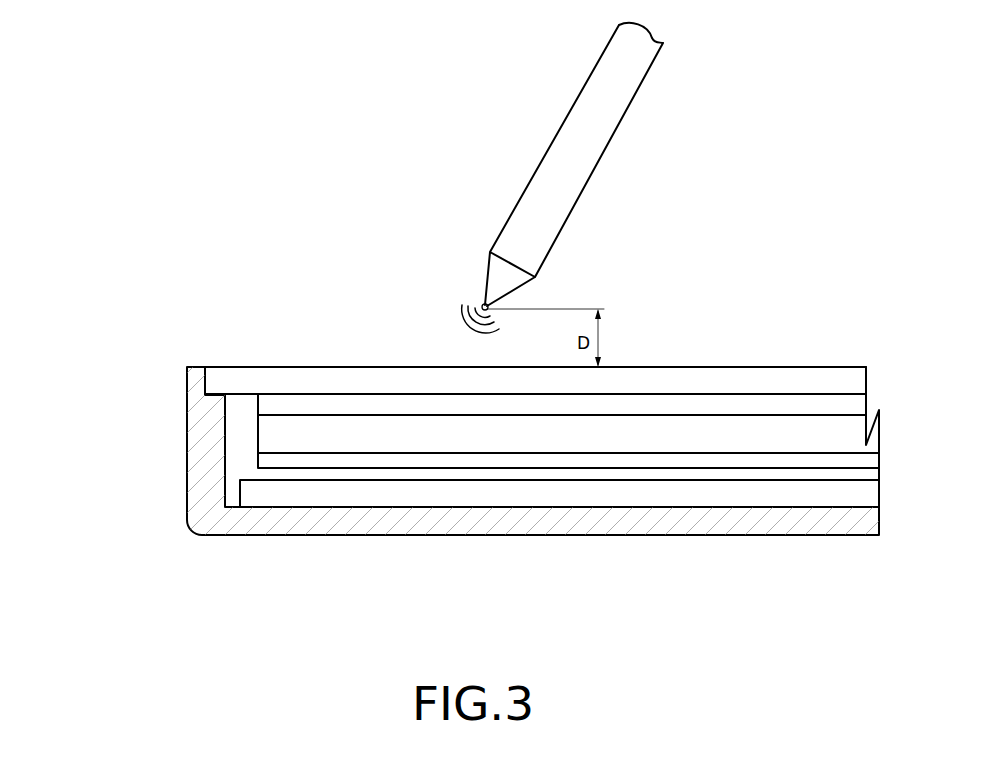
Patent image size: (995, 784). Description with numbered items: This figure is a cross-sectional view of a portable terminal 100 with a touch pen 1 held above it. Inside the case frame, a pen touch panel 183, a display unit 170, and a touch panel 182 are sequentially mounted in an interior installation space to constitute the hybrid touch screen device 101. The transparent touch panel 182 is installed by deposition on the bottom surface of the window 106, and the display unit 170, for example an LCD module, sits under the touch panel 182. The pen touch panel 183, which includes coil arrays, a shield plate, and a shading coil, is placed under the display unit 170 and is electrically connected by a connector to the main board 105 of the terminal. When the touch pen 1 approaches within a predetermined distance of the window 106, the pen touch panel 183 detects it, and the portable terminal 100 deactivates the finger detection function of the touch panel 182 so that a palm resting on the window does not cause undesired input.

The touch pen 1 is at (552, 139).
The portable terminal 100 is at (755, 313).
The hybrid touch screen device 101 is at (133, 395).
The window 106 is at (270, 366).
The touch panel 182 is at (262, 407).
The display unit 170 is at (262, 436).
The pen touch panel 183 is at (262, 460).
The main board 105 is at (248, 479).